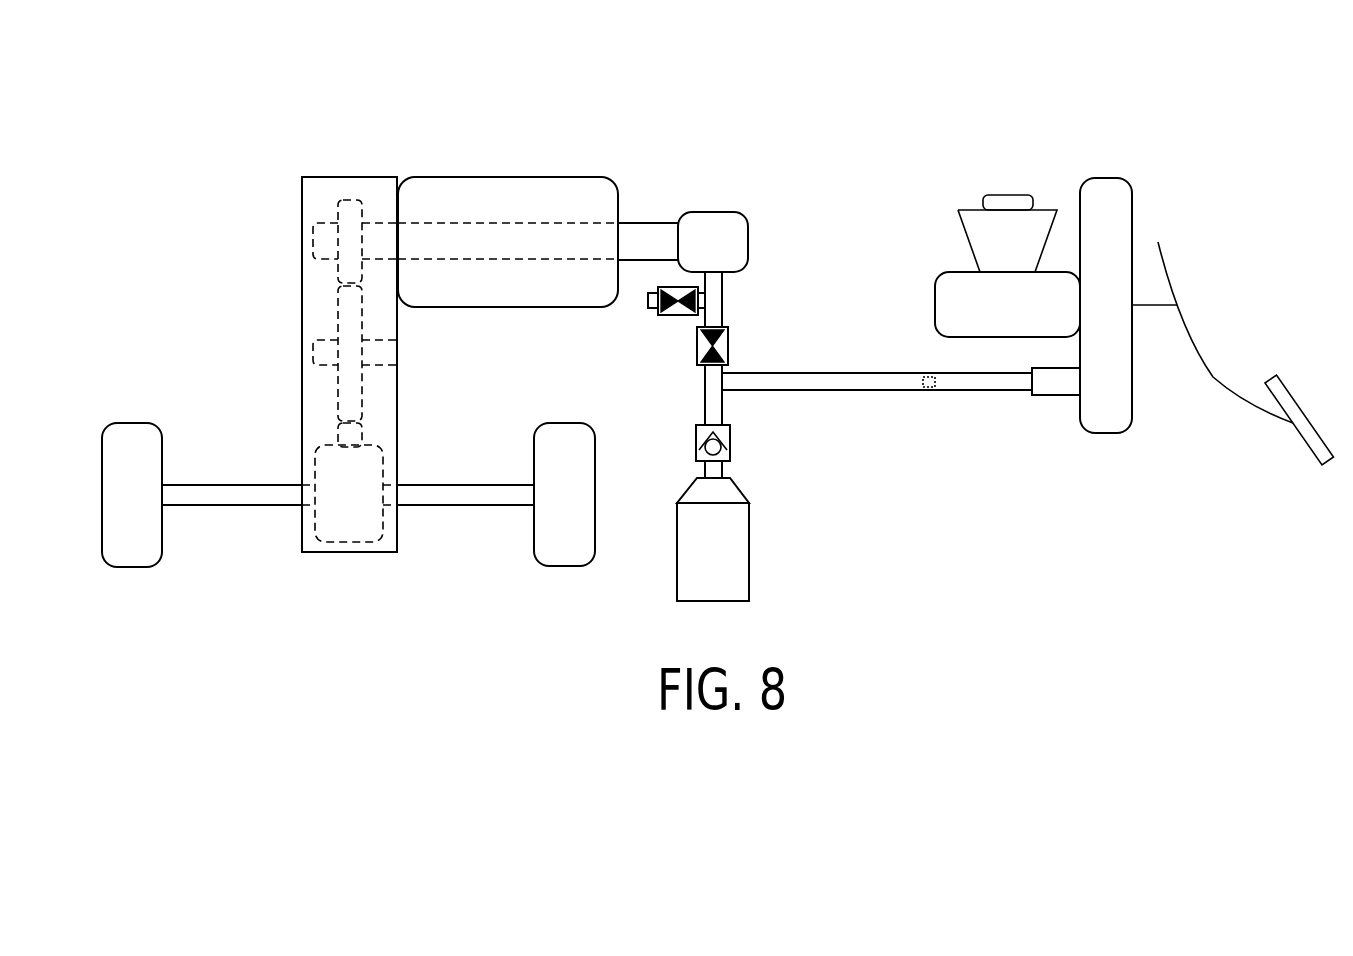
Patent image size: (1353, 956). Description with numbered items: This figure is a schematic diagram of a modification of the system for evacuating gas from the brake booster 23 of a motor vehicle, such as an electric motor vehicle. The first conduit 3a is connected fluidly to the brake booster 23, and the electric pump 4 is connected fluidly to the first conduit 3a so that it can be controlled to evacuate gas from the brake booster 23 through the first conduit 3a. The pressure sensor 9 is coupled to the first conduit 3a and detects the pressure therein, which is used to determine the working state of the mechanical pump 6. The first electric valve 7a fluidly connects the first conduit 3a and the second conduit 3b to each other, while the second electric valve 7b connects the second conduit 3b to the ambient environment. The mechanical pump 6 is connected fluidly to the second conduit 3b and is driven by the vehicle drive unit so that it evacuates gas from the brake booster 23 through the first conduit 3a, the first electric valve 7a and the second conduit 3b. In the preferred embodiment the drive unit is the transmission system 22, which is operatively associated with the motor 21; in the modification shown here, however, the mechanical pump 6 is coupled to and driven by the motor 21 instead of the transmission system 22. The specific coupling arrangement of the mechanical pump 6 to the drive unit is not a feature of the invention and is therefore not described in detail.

The motor 21 is at (512, 187).
The transmission system 22 is at (343, 312).
The brake booster 23 is at (1108, 178).
The mechanical pump 6 is at (751, 205).
The second conduit 3b is at (734, 298).
The first conduit 3a is at (985, 402).
The first electric valve 7a is at (728, 343).
The second electric valve 7b is at (673, 315).
The pressure sensor 9 is at (912, 371).
The electric pump 4 is at (764, 550).